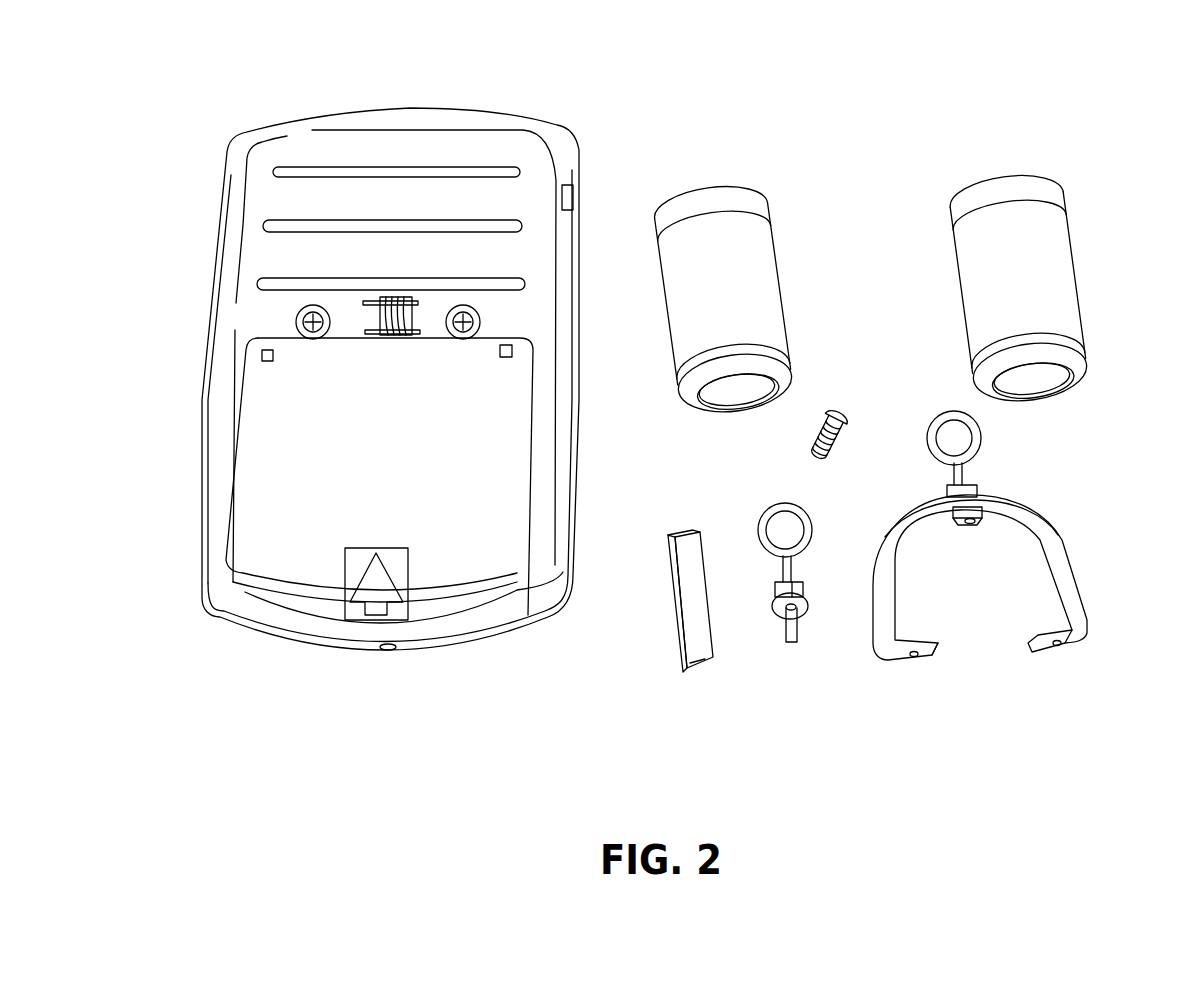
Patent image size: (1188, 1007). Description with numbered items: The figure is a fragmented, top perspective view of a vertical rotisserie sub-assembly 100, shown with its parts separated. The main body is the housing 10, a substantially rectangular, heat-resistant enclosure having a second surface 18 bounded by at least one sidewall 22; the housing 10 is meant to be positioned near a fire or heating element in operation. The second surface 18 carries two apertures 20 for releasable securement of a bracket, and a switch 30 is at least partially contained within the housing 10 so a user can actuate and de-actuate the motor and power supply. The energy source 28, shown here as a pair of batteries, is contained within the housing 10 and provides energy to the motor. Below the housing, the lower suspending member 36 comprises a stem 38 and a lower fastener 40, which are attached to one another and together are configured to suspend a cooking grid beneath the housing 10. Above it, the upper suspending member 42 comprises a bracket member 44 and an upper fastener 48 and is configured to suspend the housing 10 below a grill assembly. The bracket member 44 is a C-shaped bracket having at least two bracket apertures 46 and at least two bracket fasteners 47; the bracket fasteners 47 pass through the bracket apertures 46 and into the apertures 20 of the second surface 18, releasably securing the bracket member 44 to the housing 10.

The vertical rotisserie sub-assembly 100 is at (358, 742).
The housing 10 is at (365, 112).
The second surface 18 is at (457, 560).
The apertures 20 is at (297, 323).
The sidewall 22 is at (508, 628).
The energy source 28 is at (760, 242).
The switch 30 is at (392, 322).
The lower suspending member 36 is at (681, 727).
The stem 38 is at (713, 653).
The lower fastener 40 is at (795, 645).
The upper suspending member 42 is at (881, 740).
The bracket member 44 is at (1065, 580).
The bracket apertures 46 is at (914, 658).
The bracket fasteners 47 is at (835, 443).
The upper fastener 48 is at (982, 435).